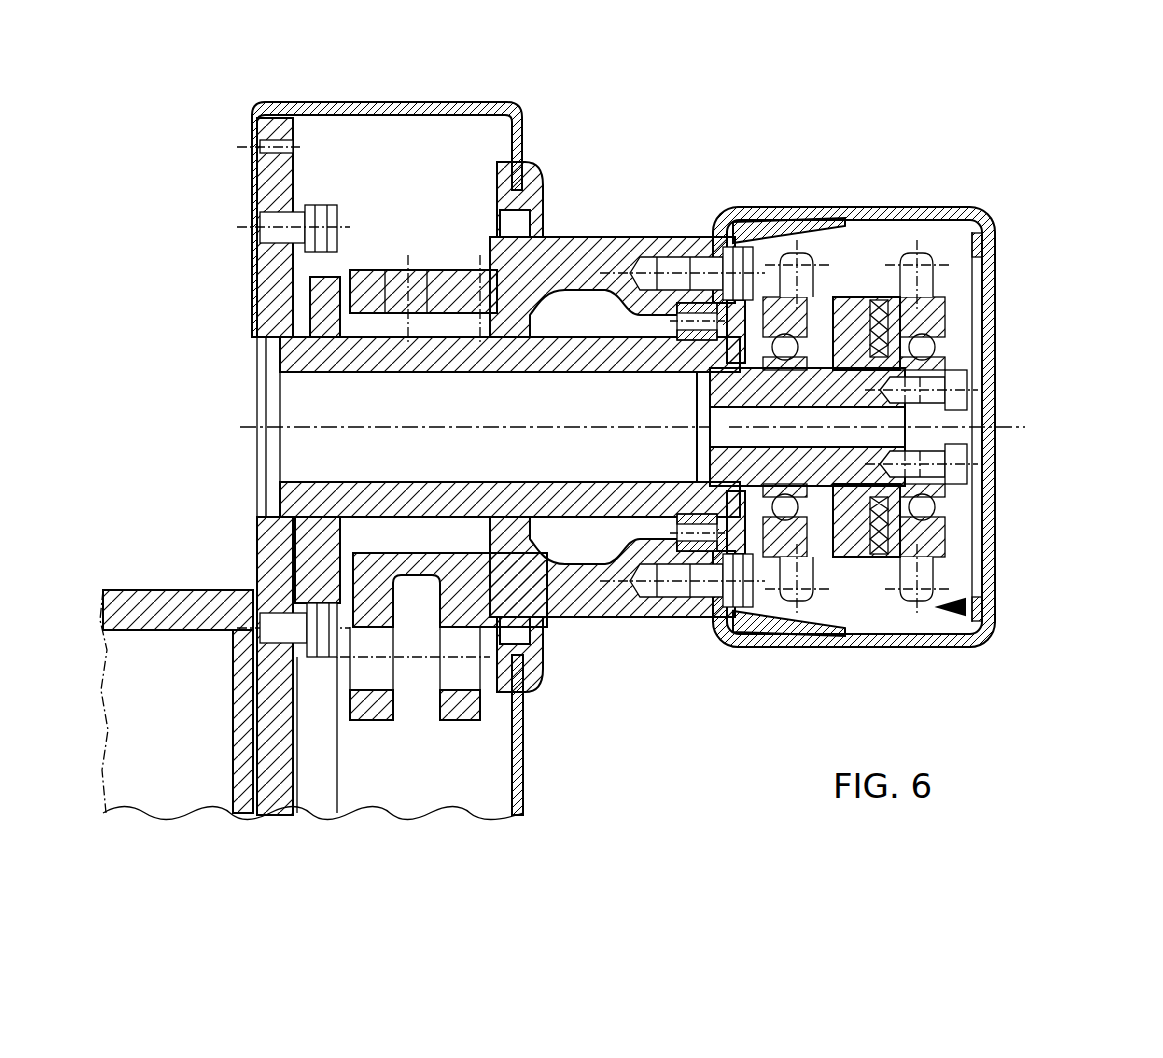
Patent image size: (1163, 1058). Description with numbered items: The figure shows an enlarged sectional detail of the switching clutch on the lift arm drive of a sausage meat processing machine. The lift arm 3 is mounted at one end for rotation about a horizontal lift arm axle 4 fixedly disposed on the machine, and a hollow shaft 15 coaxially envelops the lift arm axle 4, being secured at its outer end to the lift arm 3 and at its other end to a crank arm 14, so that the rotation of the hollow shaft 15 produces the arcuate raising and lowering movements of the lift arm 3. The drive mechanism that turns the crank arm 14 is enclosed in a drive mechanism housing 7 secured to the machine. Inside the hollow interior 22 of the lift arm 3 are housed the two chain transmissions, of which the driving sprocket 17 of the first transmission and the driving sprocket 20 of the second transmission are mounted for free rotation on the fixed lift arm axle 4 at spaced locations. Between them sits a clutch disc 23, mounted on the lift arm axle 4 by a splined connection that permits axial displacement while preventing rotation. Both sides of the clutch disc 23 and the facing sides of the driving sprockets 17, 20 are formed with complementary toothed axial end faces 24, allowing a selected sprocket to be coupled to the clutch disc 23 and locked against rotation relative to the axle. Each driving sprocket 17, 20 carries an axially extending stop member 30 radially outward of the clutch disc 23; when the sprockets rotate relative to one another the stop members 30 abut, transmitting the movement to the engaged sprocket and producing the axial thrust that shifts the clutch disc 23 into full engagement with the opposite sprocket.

The lift arm 3 is at (932, 210).
The lift arm axle 4 is at (340, 343).
The drive mechanism housing 7 is at (525, 145).
The crank arm 14 is at (457, 707).
The hollow shaft 15 is at (577, 265).
The driving sprocket 17 is at (935, 273).
The driving sprocket 20 is at (810, 297).
The hollow interior 22 is at (967, 607).
The clutch disc 23 is at (863, 303).
The toothed axial end faces 24 is at (897, 327).
The stop member 30 is at (866, 300).